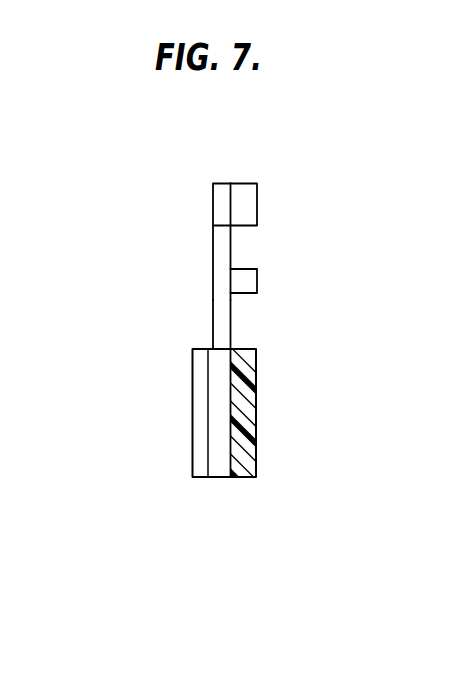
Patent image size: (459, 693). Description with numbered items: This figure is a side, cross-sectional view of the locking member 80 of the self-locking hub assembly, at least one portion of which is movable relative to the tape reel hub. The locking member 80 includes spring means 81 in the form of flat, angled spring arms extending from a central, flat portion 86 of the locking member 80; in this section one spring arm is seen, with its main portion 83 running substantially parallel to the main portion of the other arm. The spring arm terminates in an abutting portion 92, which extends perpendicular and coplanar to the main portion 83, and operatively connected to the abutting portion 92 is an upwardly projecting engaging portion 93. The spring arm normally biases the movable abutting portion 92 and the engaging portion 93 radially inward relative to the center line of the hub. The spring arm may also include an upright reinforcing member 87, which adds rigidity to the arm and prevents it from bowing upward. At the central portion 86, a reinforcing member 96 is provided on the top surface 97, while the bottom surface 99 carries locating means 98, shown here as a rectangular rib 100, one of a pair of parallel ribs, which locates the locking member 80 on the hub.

The locking member 80 is at (153, 206).
The spring means 81 is at (160, 284).
The main portion 83 is at (213, 249).
The central, flat portion 86 is at (218, 470).
The reinforcing member 87 is at (245, 282).
The abutting portion 92 is at (217, 198).
The engaging portion 93 is at (247, 200).
The reinforcing member 96 is at (247, 398).
The top surface 97 is at (230, 341).
The locating means 98 is at (170, 442).
The bottom surface 99 is at (213, 344).
The rib 100 is at (192, 372).